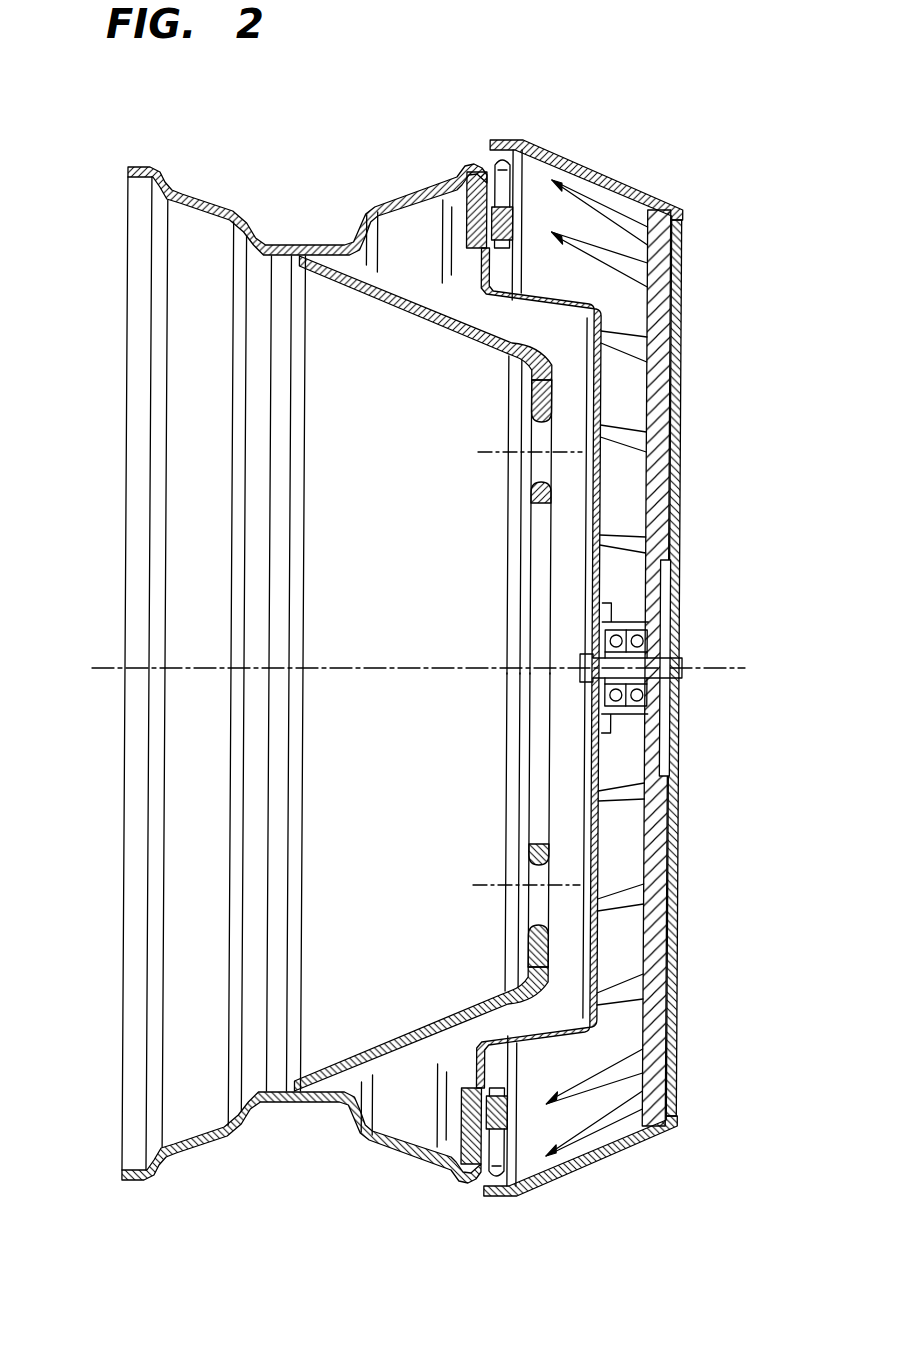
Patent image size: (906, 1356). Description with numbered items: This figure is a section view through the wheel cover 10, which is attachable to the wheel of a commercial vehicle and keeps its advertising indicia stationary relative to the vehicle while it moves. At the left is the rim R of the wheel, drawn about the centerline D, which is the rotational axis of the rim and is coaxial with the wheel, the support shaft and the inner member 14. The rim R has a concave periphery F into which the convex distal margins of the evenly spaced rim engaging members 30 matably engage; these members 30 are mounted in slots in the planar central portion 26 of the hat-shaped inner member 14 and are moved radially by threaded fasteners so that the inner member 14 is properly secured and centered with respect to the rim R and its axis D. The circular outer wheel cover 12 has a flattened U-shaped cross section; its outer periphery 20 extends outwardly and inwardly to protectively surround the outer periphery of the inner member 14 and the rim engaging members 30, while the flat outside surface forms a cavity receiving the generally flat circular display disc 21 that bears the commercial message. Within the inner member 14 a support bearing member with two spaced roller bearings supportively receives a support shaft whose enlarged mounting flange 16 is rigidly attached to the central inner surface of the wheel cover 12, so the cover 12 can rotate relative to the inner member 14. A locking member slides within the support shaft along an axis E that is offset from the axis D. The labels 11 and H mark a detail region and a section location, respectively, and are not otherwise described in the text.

The wheel cover 10 is at (664, 651).
The detail circle of hub region 11 is at (624, 670).
The outer wheel cover 12 is at (636, 651).
The inner member 14 is at (622, 668).
The enlarged mounting flange 16 is at (663, 597).
The outer periphery of the wheel cover 20 is at (578, 167).
The display disc 21 is at (686, 282).
The planar central portion 26 is at (603, 945).
The rim engaging member 30 is at (455, 206).
The rim R is at (122, 421).
The centerline D is at (420, 668).
The axis of the locking member E is at (695, 672).
The concave periphery of the rim F is at (465, 1176).
The section line H is at (540, 877).